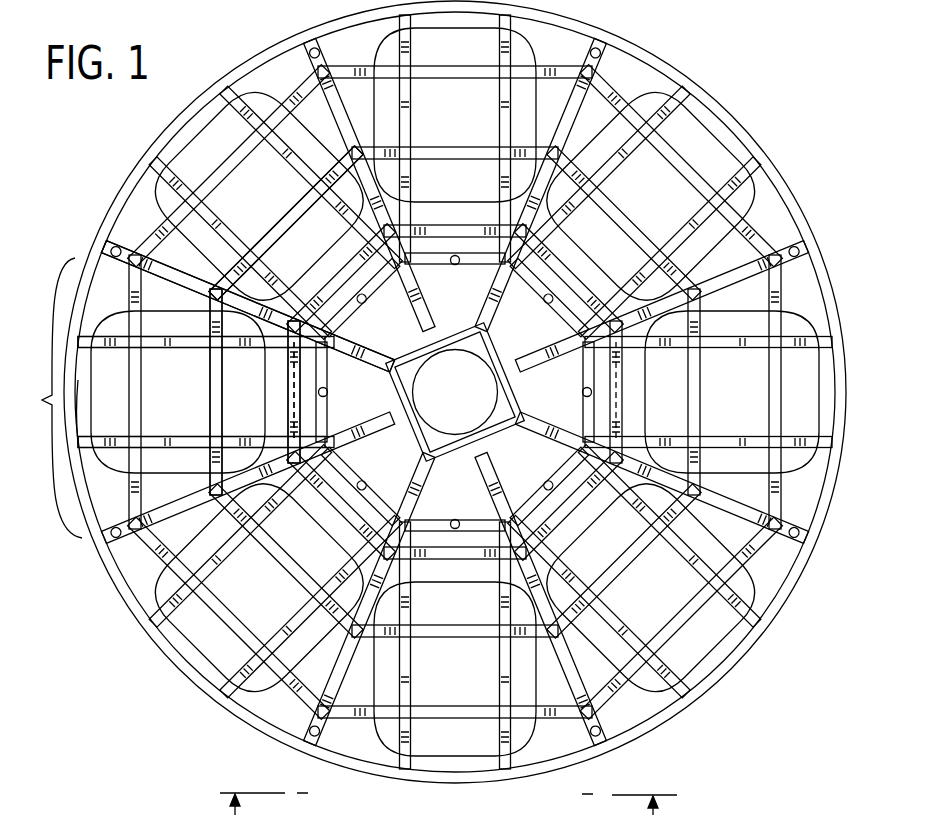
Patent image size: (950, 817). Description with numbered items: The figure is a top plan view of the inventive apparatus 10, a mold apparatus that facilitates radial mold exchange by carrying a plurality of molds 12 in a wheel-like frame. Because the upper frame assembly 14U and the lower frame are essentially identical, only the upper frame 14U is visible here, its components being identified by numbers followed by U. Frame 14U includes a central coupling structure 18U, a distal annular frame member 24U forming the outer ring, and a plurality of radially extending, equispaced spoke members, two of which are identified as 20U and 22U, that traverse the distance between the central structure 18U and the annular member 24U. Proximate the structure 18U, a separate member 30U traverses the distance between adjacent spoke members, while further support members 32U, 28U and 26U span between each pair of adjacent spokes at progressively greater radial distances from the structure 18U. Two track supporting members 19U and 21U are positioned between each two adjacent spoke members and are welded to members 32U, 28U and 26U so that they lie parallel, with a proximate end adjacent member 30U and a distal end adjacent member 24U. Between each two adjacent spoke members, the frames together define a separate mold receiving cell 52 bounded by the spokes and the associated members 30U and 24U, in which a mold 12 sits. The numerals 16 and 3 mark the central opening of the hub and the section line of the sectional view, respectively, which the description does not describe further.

The inventive apparatus 10 is at (683, 65).
The molds 12 is at (207, 152).
The upper frame assembly 14U is at (252, 48).
The central opening 16 is at (467, 410).
The central coupling structure 18U is at (502, 353).
The track supporting member 19U is at (153, 345).
The spoke member 20U is at (228, 243).
The track supporting member 21U is at (123, 440).
The spoke member 22U is at (120, 570).
The distal annular frame member 24U is at (75, 412).
The support member 26U is at (110, 266).
The support member 28U is at (213, 312).
The member proximate central coupling structure 30U is at (320, 422).
The support member 32U is at (291, 356).
The mold receiving cell 52 is at (48, 398).
The section line 3- 3 is at (448, 789).